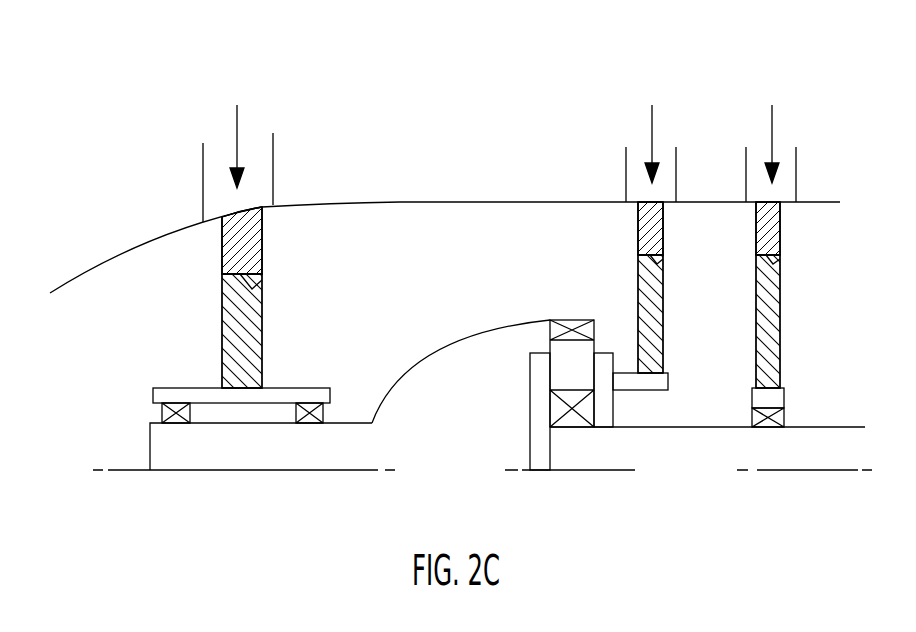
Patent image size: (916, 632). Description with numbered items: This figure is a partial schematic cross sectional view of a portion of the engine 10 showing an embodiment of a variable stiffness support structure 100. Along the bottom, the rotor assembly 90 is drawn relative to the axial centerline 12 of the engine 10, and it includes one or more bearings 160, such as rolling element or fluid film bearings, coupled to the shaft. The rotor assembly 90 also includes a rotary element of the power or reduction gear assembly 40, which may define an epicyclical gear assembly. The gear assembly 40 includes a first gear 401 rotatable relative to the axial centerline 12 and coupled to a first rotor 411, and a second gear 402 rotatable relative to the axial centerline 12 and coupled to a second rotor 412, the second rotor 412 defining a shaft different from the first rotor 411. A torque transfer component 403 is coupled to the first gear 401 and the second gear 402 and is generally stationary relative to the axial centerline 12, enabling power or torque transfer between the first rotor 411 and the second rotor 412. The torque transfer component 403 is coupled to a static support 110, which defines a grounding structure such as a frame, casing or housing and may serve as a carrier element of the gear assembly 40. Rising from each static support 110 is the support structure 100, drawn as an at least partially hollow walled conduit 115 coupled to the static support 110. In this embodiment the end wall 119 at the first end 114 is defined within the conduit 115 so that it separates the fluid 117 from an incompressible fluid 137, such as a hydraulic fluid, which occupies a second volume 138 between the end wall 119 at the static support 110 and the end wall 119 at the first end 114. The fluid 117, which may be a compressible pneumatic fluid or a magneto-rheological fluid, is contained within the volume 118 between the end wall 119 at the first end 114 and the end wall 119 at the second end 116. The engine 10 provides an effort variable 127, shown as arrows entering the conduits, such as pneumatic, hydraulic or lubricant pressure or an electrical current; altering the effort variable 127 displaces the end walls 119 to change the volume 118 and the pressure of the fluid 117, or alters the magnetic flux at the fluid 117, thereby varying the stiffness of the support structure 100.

The engine 10 is at (130, 144).
The axial centerline 12 is at (330, 472).
The power or reduction gear assembly 40 is at (524, 330).
The rotor assembly 90 is at (368, 438).
The support structure 100 is at (286, 174).
The static support 110 is at (272, 392).
The first end 114 is at (208, 266).
The conduit 115 is at (210, 292).
The second end 116 is at (271, 219).
The fluid 117 is at (245, 240).
The volume 118 is at (228, 224).
The end wall 119 is at (222, 215).
The effort variable 127 is at (238, 125).
The incompressible fluid 137 is at (247, 305).
The second volume 138 is at (228, 340).
The bearing 160 is at (162, 412).
The first gear 401 is at (570, 415).
The second gear 402 is at (572, 328).
The torque transfer component 403 is at (546, 366).
The first rotor 411 is at (732, 429).
The second rotor 412 is at (378, 413).